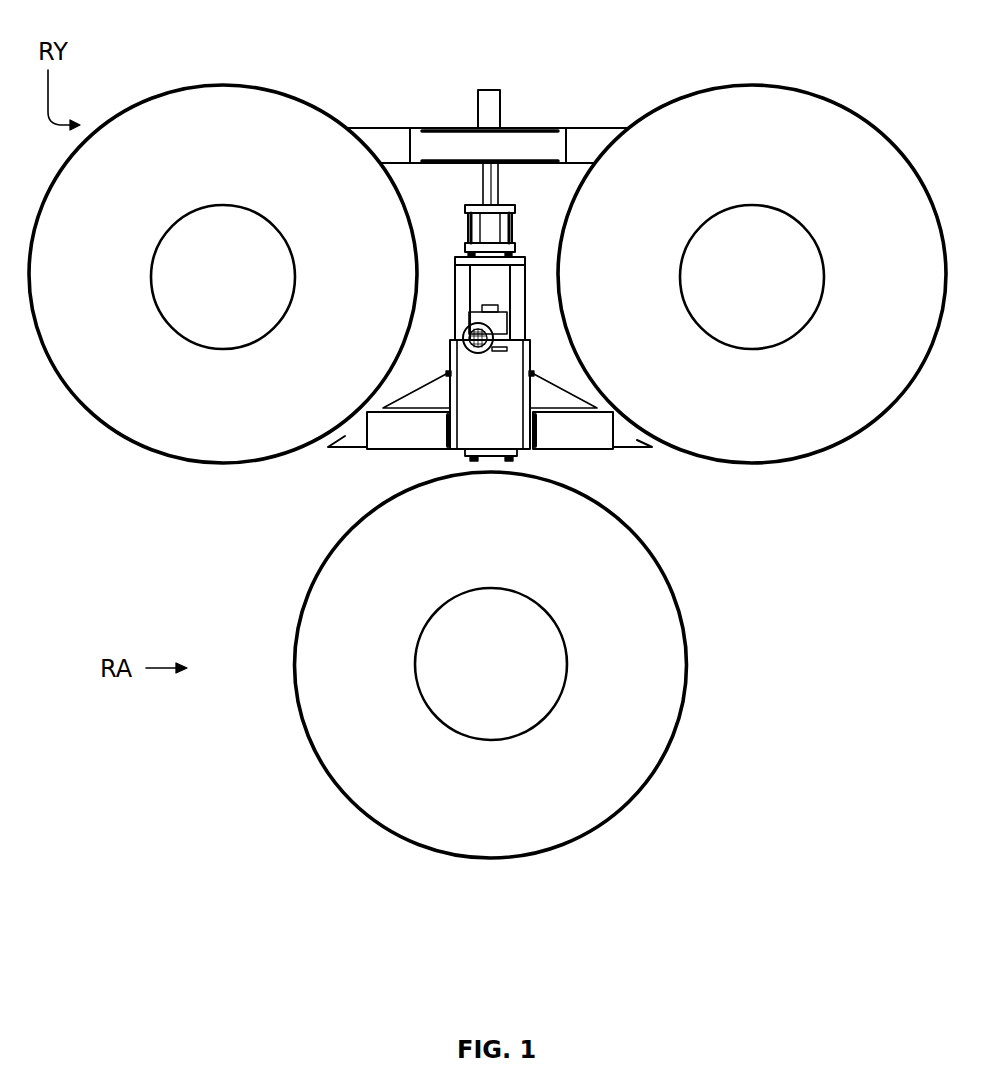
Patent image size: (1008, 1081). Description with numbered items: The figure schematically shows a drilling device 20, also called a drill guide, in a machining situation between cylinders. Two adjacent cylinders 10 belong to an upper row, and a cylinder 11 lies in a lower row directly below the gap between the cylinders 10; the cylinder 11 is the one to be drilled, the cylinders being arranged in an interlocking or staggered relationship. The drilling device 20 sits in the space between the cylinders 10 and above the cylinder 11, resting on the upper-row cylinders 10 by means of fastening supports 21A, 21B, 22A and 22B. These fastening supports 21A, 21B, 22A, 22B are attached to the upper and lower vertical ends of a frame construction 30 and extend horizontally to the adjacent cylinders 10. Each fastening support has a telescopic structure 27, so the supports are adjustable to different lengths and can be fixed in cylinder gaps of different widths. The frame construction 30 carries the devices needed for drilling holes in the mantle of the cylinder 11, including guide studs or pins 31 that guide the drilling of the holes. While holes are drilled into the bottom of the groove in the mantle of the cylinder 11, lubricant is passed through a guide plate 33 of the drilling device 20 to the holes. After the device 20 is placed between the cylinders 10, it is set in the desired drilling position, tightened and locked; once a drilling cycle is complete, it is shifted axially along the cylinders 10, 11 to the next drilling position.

The cylinders 10 is at (275, 94).
The cylinder 11 is at (681, 617).
The drilling device 20 is at (524, 66).
The fastening support 21A is at (374, 138).
The fastening support 21B is at (603, 137).
The fastening support 22A is at (346, 437).
The fastening support 22B is at (637, 444).
The telescopic structure 27 is at (449, 128).
The frame construction 30 is at (534, 236).
The guide studs 31 is at (510, 464).
The guide plate 33 is at (463, 452).